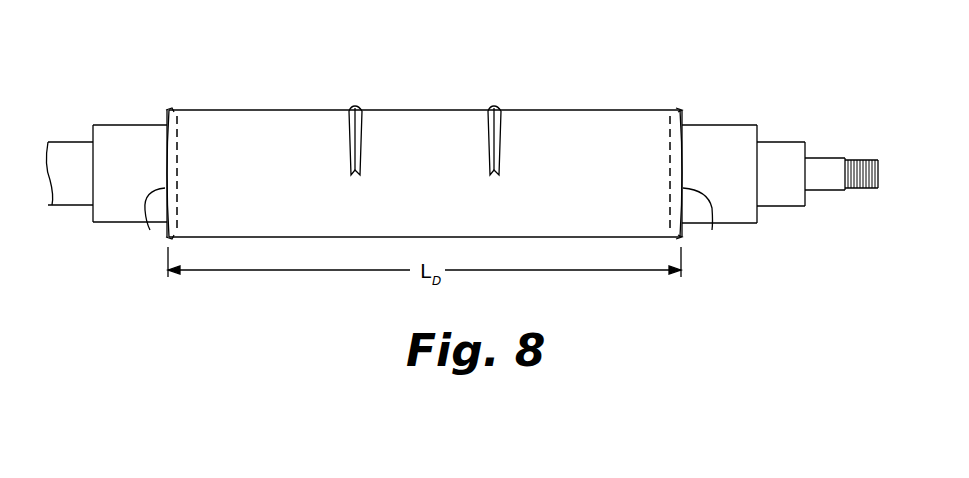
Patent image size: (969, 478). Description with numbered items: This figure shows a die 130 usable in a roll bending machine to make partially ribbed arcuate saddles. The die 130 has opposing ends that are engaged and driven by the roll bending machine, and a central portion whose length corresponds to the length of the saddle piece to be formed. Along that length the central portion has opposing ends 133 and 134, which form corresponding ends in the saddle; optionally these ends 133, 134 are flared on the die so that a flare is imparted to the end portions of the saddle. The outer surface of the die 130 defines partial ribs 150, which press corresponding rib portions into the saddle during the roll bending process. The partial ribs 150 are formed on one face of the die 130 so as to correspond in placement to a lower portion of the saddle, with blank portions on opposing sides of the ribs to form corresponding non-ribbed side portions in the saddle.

The die 130 is at (492, 68).
The end of central portion 133 is at (712, 228).
The end of central portion 134 is at (150, 228).
The partial ribs 150 is at (492, 150).